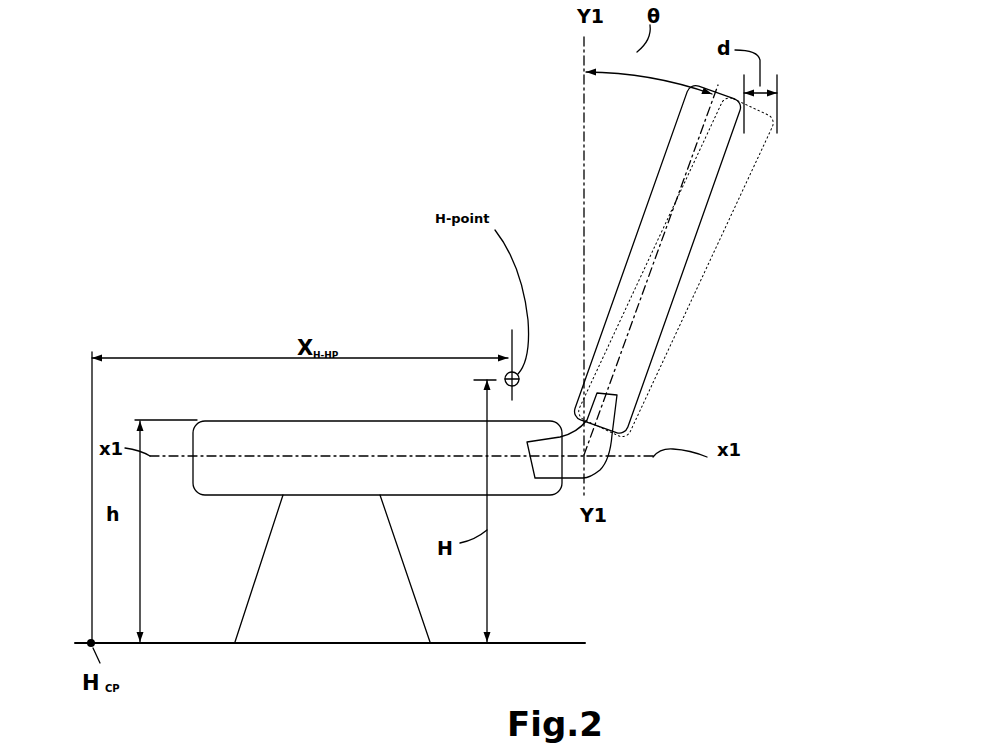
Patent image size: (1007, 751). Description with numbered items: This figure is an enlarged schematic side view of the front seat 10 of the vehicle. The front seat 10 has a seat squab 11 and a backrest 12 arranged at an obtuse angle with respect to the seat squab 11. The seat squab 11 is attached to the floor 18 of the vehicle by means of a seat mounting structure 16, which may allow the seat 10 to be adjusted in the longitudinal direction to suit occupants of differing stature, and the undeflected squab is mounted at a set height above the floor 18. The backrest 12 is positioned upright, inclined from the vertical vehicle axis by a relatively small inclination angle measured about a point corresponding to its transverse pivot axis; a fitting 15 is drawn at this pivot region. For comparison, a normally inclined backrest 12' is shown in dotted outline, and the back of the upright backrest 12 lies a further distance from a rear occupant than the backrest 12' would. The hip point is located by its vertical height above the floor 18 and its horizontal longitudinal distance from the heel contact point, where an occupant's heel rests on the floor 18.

The front seat 10 is at (463, 418).
The seat squab 11 is at (320, 421).
The backrest 12 is at (695, 259).
The normally inclined backrest 12' is at (701, 267).
The hinge bracket / recliner fitting 15 is at (610, 440).
The seat mounting structure 16 is at (262, 566).
The floor 18 is at (565, 637).